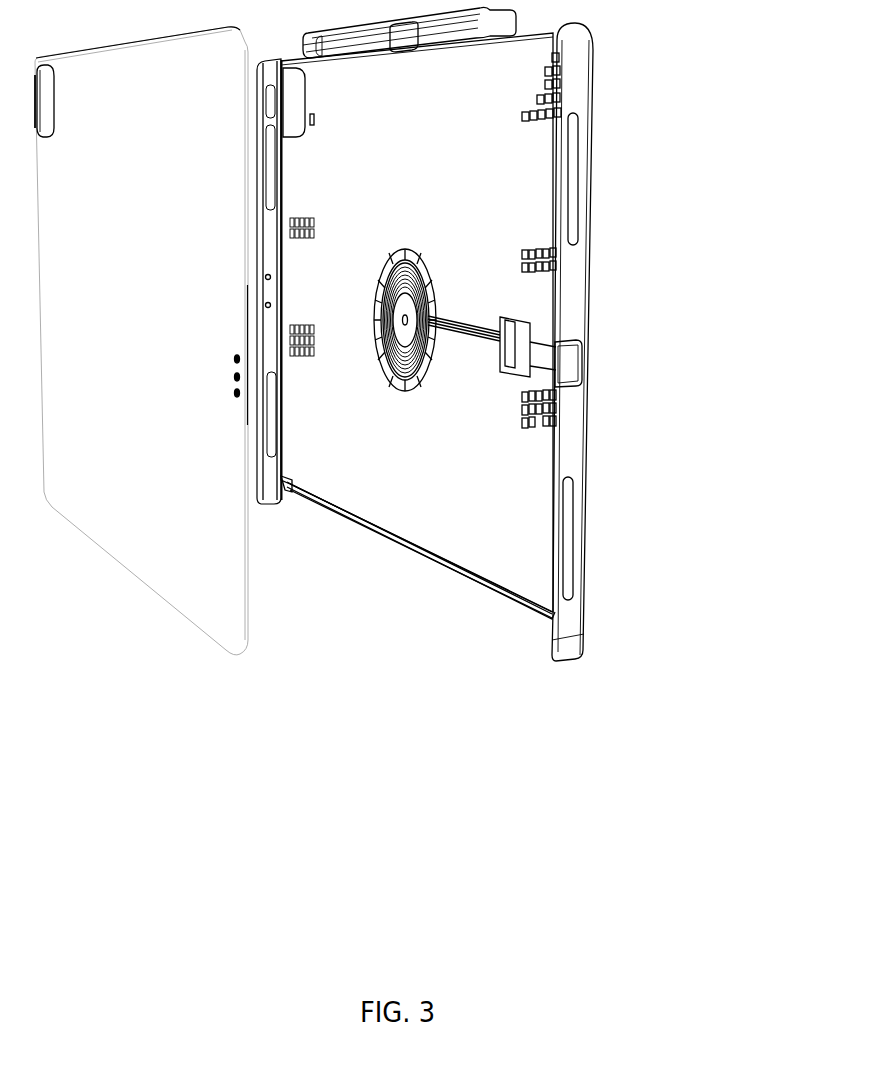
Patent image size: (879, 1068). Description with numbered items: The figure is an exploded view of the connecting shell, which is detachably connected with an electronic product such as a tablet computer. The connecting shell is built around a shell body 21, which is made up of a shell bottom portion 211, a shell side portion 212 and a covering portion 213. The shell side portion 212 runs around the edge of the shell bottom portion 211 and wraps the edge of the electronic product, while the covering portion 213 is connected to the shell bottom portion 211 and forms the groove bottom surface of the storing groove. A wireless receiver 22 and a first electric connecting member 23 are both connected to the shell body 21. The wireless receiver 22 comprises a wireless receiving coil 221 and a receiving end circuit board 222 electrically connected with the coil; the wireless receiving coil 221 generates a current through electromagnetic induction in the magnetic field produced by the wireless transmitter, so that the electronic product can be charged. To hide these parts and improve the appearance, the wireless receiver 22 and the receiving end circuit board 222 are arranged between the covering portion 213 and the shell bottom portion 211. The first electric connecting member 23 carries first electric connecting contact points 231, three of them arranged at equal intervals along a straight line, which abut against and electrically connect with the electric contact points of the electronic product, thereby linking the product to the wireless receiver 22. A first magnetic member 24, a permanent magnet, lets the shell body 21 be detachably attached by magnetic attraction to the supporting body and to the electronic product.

The shell body 21 is at (382, 768).
The shell bottom portion 211 is at (480, 578).
The shell side portion 212 is at (570, 657).
The covering portion 213 is at (210, 630).
The wireless receiver 22 is at (705, 153).
The wireless receiving coil 221 is at (422, 278).
The receiving end circuit board 222 is at (535, 150).
The first electric connecting member 23 is at (727, 311).
The first electric connecting contact point 231 is at (575, 338).
The first magnetic member 24 is at (432, 298).